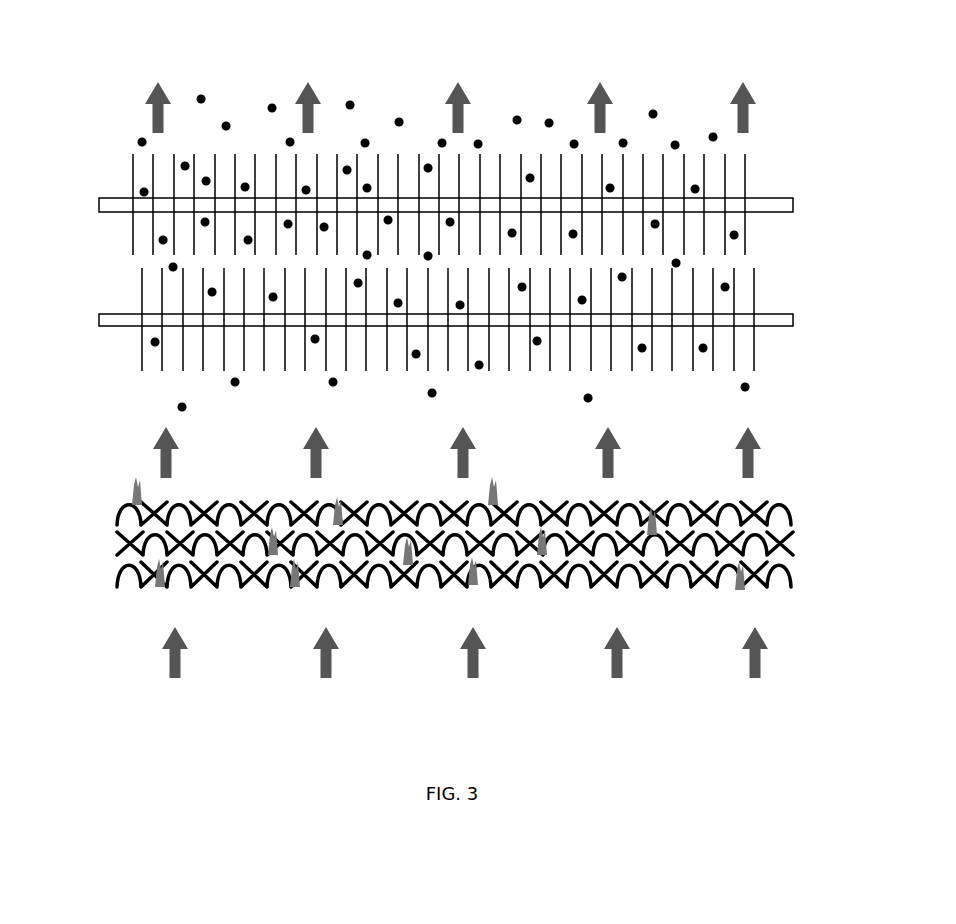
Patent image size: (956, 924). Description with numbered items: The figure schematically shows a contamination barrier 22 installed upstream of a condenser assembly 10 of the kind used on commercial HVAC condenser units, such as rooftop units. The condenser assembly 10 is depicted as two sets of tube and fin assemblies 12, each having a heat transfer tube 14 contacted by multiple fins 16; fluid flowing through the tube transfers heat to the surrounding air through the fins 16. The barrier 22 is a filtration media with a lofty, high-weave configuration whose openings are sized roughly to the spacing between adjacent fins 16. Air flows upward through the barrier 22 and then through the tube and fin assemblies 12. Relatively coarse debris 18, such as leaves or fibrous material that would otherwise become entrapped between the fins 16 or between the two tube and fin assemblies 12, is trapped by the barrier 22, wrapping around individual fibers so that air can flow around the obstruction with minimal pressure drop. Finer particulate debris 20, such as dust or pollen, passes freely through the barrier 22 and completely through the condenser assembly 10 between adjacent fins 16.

The condenser assembly 10 is at (813, 155).
The tube and fin assembly 12 is at (98, 237).
The heat transfer tube 14 is at (118, 205).
The fins 16 is at (745, 175).
The coarse debris 18 is at (140, 498).
The particulate debris 20 is at (653, 113).
The contamination barrier 22 is at (797, 513).